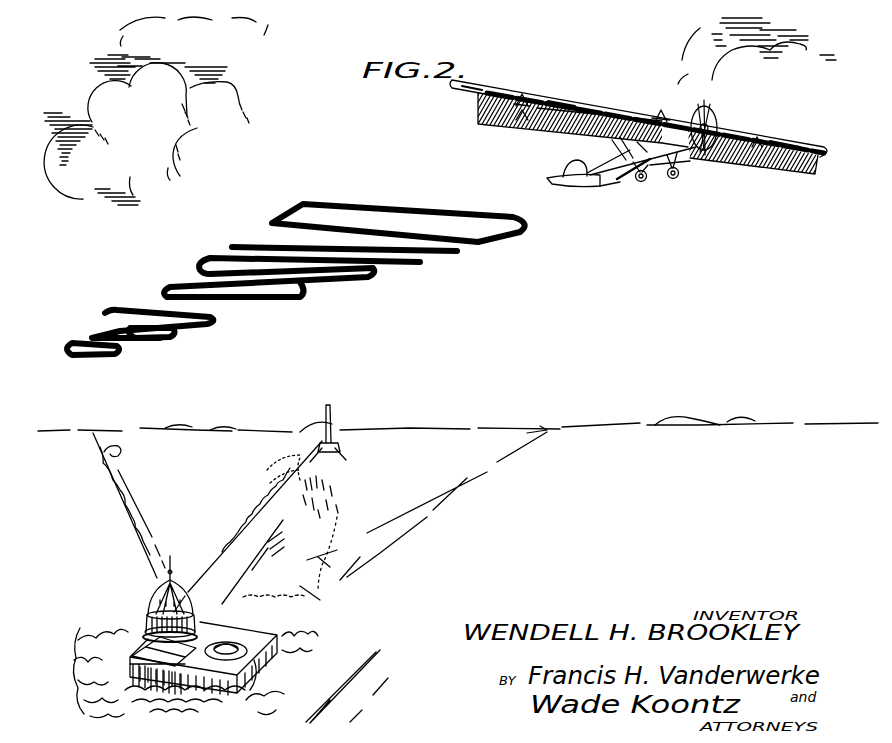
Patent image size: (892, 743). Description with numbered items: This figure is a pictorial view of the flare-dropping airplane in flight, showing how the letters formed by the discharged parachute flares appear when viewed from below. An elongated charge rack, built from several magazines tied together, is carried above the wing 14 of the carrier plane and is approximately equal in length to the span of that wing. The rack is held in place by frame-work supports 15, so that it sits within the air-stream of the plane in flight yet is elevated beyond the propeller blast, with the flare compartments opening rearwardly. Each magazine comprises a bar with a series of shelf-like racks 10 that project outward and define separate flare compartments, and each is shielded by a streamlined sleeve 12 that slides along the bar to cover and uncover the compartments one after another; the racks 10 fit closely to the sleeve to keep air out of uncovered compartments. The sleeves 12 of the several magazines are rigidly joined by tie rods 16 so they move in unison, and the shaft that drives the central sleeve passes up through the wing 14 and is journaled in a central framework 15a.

The shelf-like racks 10 is at (487, 98).
The sleeve 12 is at (468, 87).
The wing 14 is at (558, 128).
The frame-work supports 15 is at (517, 113).
The central framework 15a is at (658, 114).
The tie rods 16 is at (519, 96).